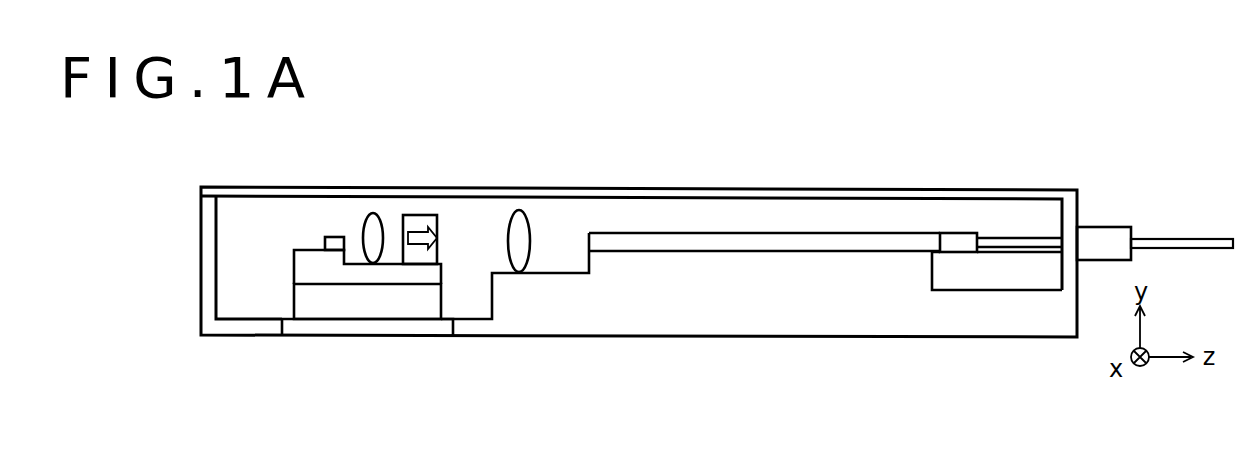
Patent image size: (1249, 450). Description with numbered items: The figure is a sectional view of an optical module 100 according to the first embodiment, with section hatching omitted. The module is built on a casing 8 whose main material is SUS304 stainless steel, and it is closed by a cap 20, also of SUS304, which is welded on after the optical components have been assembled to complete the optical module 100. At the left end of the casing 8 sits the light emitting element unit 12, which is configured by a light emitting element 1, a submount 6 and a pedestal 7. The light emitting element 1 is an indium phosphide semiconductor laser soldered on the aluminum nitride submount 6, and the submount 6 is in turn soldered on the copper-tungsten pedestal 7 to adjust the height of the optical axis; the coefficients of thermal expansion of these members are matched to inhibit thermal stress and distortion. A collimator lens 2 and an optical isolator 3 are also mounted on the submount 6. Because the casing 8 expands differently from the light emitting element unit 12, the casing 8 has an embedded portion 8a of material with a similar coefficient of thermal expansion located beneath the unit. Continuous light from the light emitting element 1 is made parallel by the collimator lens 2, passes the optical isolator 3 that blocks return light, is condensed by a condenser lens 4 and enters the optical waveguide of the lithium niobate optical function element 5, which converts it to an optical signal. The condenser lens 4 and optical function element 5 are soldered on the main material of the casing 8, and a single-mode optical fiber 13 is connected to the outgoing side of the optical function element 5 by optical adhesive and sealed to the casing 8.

The optical module 100 is at (1138, 150).
The cap 20 is at (962, 188).
The light emitting element unit 12 is at (352, 267).
The light emitting element 1 is at (336, 237).
The collimator lens 2 is at (372, 226).
The optical isolator 3 is at (417, 226).
The condenser lens 4 is at (518, 258).
The optical function element 5 is at (703, 242).
The submount 6 is at (390, 275).
The pedestal 7 is at (430, 302).
The casing 8 is at (549, 315).
The embedded portion 8a is at (432, 340).
The single-mode optical fiber 13 is at (1025, 243).